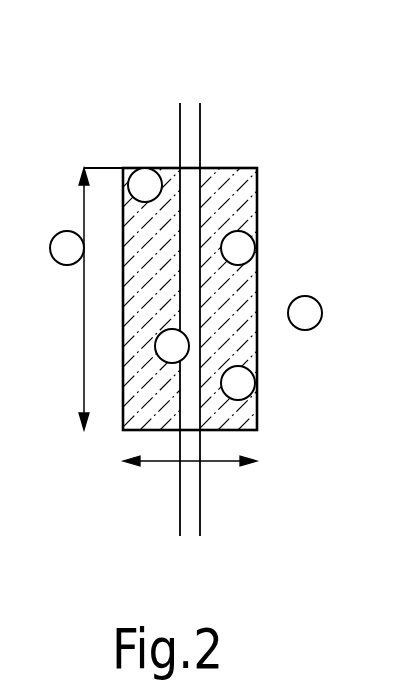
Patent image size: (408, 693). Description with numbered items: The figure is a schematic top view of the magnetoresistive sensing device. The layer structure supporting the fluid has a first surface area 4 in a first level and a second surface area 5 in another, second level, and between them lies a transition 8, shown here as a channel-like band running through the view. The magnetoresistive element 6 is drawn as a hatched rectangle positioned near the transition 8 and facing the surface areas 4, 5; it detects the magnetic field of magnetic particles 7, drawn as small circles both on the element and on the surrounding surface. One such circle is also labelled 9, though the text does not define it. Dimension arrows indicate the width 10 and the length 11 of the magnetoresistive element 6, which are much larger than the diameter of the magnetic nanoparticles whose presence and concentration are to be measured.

The first surface area 4 is at (130, 128).
The second surface area 5 is at (232, 130).
The magnetoresistive element 6 is at (122, 418).
The magnetic particle 7 is at (240, 245).
The transition 8 is at (188, 520).
The particle 9 is at (132, 206).
The width 10 is at (190, 476).
The length 11 is at (88, 299).